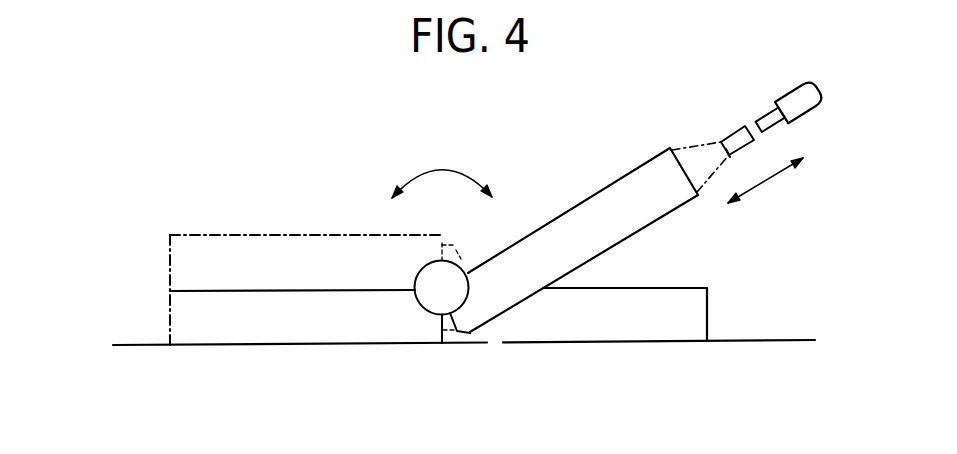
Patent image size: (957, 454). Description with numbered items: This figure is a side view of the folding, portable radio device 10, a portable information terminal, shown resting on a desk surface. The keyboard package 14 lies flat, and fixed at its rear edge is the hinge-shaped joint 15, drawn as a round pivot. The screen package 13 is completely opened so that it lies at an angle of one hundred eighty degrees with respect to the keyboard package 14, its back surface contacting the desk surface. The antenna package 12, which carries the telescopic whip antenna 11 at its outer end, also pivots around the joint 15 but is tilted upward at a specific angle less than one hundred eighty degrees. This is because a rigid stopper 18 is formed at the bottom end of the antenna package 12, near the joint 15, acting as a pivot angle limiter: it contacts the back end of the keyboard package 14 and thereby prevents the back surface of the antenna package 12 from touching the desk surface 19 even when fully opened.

The folding, portable radio device 10 is at (282, 137).
The telescopic whip antenna 11 is at (792, 102).
The antenna package 12 is at (587, 207).
The screen package 13 is at (663, 293).
The keyboard package 14 is at (168, 323).
The hinge-shaped joint 15 is at (432, 300).
The rigid stopper 18 is at (455, 344).
The base plate 19 is at (775, 340).